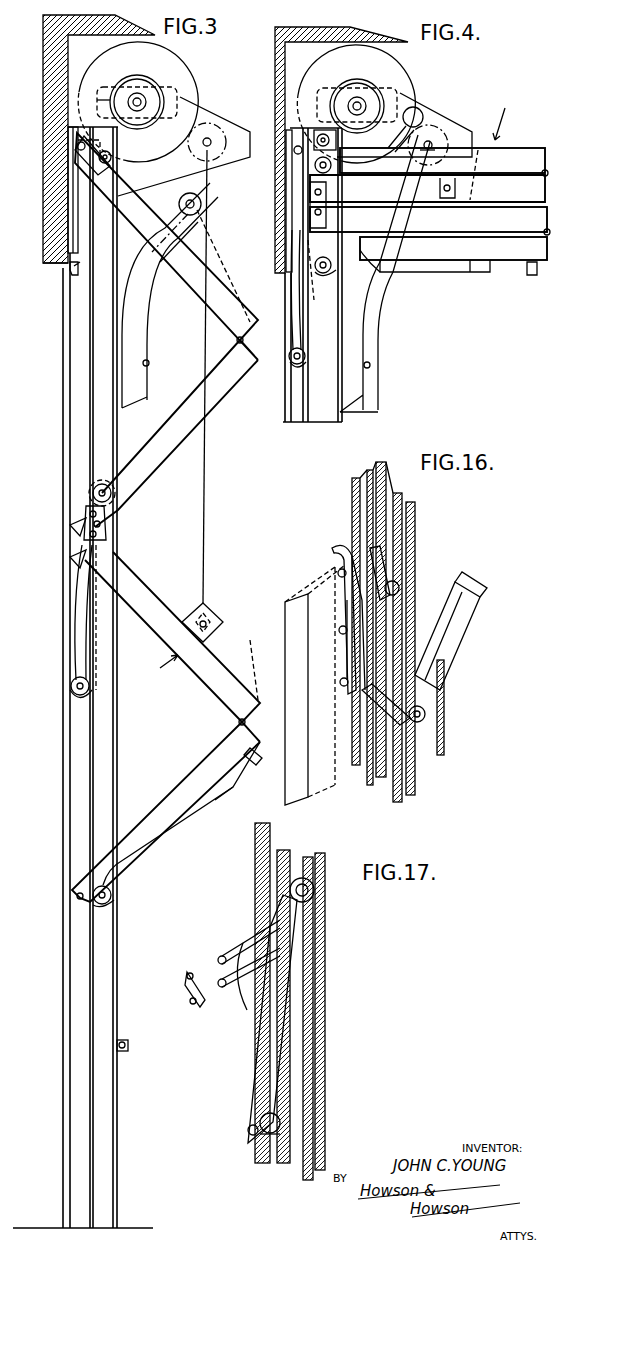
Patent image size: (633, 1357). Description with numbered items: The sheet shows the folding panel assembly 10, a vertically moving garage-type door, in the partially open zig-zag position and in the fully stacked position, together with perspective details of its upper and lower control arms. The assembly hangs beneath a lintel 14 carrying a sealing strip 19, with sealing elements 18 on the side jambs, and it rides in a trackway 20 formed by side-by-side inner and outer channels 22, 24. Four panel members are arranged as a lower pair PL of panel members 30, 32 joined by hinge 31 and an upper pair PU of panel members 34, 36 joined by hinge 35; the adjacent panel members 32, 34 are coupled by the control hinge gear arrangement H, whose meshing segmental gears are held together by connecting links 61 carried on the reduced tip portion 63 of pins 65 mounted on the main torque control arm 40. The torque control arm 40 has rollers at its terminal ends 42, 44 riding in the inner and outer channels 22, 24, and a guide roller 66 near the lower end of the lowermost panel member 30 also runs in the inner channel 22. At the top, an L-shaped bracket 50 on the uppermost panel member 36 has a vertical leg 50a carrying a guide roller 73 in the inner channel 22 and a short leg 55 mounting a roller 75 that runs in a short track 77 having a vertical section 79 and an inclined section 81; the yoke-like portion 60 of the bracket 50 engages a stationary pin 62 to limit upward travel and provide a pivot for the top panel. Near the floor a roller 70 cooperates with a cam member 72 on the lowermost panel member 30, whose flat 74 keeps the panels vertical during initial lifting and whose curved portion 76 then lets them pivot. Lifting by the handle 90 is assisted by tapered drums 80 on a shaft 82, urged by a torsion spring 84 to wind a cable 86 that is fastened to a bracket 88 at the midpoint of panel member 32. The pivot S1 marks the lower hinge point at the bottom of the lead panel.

In FIG. 3, the folding panel assembly 10 is at (154, 668).
In FIG. 4, the folding panel assembly 10 is at (507, 115).
In FIG. 3, the lintel 14 is at (44, 66).
In FIG. 4, the lintel 14 is at (276, 80).
In FIG. 3, the sealing elements 18 is at (68, 318).
In FIG. 3, the sealing strip 19 is at (70, 280).
In FIG. 3, the trackways 20 is at (70, 970).
In FIG. 4, the trackways 20 is at (322, 424).
In FIG. 16, the trackways 20 is at (410, 540).
In FIG. 17, the trackways 20 is at (326, 862).
In FIG. 3, the inner channel 22 is at (102, 373).
In FIG. 4, the inner channel 22 is at (322, 414).
In FIG. 16, the inner channel 22 is at (404, 506).
In FIG. 17, the inner channel 22 is at (304, 950).
In FIG. 3, the outer channel 24 is at (87, 340).
In FIG. 4, the outer channel 24 is at (300, 400).
In FIG. 16, the outer channel 24 is at (354, 496).
In FIG. 17, the outer channel 24 is at (272, 874).
In FIG. 3, the lowermost panel member 30 is at (156, 805).
In FIG. 4, the lowermost panel member 30 is at (437, 252).
In FIG. 3, the hinge 31 is at (238, 722).
In FIG. 4, the hinge 31 is at (545, 236).
In FIG. 3, the panel member 32 is at (165, 598).
In FIG. 4, the panel member 32 is at (518, 236).
In FIG. 3, the panel member 34 is at (170, 420).
In FIG. 4, the panel member 34 is at (522, 175).
In FIG. 3, the hinge 35 is at (244, 340).
In FIG. 4, the hinge 35 is at (545, 176).
In FIG. 3, the uppermost panel member 36 is at (202, 334).
In FIG. 4, the uppermost panel member 36 is at (516, 146).
In FIG. 16, the uppermost panel member 36 is at (289, 586).
In FIG. 3, the main torque control arm 40 is at (78, 600).
In FIG. 4, the main torque control arm 40 is at (296, 288).
In FIG. 17, the main torque control arm 40 is at (258, 1066).
In FIG. 3, the terminal end roller 42 is at (100, 480).
In FIG. 4, the terminal end roller 42 is at (332, 170).
In FIG. 17, the terminal end roller 42 is at (314, 898).
In FIG. 3, the terminal end roller 44 is at (72, 695).
In FIG. 4, the terminal end roller 44 is at (294, 366).
In FIG. 17, the terminal end roller 44 is at (264, 1142).
In FIG. 3, the L-shaped bracket 50 is at (164, 203).
In FIG. 4, the L-shaped bracket 50 is at (432, 112).
In FIG. 16, the L-shaped bracket 50 is at (336, 550).
In FIG. 3, the vertical leg 50a is at (80, 180).
In FIG. 16, the vertical leg 50a is at (343, 655).
In FIG. 3, the short leg 55 is at (200, 226).
In FIG. 4, the short leg 55 is at (420, 128).
In FIG. 16, the short leg 55 is at (382, 712).
In FIG. 3, the yoke-like portion 60 is at (70, 140).
In FIG. 4, the yoke-like portion 60 is at (288, 148).
In FIG. 16, the yoke-like portion 60 is at (354, 598).
In FIG. 17, the connecting links 61 is at (200, 1008).
In FIG. 3, the stationary pin 62 is at (76, 150).
In FIG. 4, the stationary pin 62 is at (294, 152).
In FIG. 17, the reduced tip portion 63 is at (222, 958).
In FIG. 3, the pins 65 is at (70, 522).
In FIG. 17, the pins 65 is at (247, 996).
In FIG. 3, the guide roller 66 is at (110, 905).
In FIG. 4, the guide roller 66 is at (332, 266).
In FIG. 3, the roller 70 is at (128, 1045).
In FIG. 3, the cam member 72 is at (208, 835).
In FIG. 4, the cam member 72 is at (470, 274).
In FIG. 3, the guide roller 73 is at (128, 150).
In FIG. 4, the guide roller 73 is at (323, 132).
In FIG. 16, the guide roller 73 is at (388, 562).
In FIG. 3, the flat 74 is at (222, 800).
In FIG. 4, the flat 74 is at (482, 274).
In FIG. 3, the roller 75 is at (200, 205).
In FIG. 4, the roller 75 is at (414, 106).
In FIG. 16, the roller 75 is at (426, 710).
In FIG. 3, the curved portion 76 is at (168, 855).
In FIG. 4, the curved portion 76 is at (443, 286).
In FIG. 3, the short track 77 is at (142, 280).
In FIG. 4, the short track 77 is at (388, 300).
In FIG. 16, the short track 77 is at (462, 650).
In FIG. 3, the vertical section 79 is at (150, 364).
In FIG. 4, the vertical section 79 is at (372, 366).
In FIG. 16, the vertical section 79 is at (444, 750).
In FIG. 3, the tapered drums 80 is at (182, 70).
In FIG. 4, the tapered drums 80 is at (326, 82).
In FIG. 3, the inclined section 81 is at (152, 294).
In FIG. 4, the inclined section 81 is at (386, 276).
In FIG. 16, the inclined section 81 is at (484, 584).
In FIG. 3, the shaft 82 is at (137, 98).
In FIG. 4, the shaft 82 is at (360, 102).
In FIG. 3, the torsion spring 84 is at (110, 82).
In FIG. 4, the torsion spring 84 is at (352, 85).
In FIG. 3, the cable 86 is at (205, 520).
In FIG. 4, the cable 86 is at (420, 152).
In FIG. 3, the bracket 88 is at (212, 612).
In FIG. 4, the bracket 88 is at (458, 190).
In FIG. 3, the handle 90 is at (256, 763).
In FIG. 4, the handle 90 is at (534, 276).
In FIG. 3, the control hinge gear arrangement H is at (108, 524).
In FIG. 4, the control hinge gear arrangement H is at (306, 200).
In FIG. 3, the upper pair PU is at (226, 300).
In FIG. 4, the upper pair PU is at (478, 148).
In FIG. 3, the lower pair PL is at (246, 690).
In FIG. 4, the lower pair PL is at (305, 240).
In FIG. 3, the pivot S1 is at (76, 898).